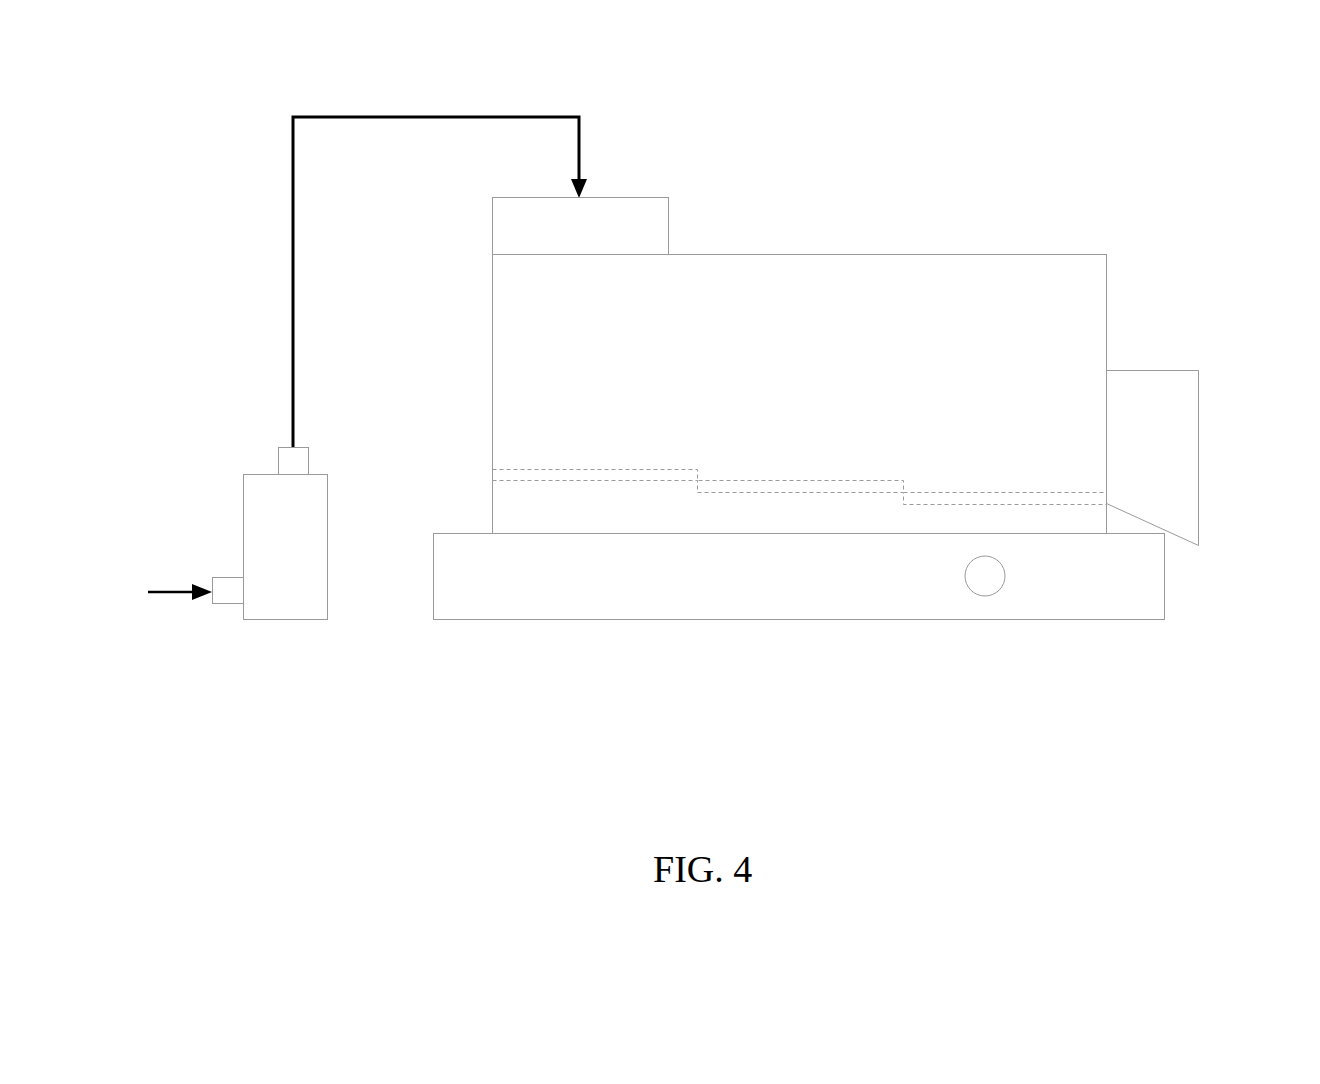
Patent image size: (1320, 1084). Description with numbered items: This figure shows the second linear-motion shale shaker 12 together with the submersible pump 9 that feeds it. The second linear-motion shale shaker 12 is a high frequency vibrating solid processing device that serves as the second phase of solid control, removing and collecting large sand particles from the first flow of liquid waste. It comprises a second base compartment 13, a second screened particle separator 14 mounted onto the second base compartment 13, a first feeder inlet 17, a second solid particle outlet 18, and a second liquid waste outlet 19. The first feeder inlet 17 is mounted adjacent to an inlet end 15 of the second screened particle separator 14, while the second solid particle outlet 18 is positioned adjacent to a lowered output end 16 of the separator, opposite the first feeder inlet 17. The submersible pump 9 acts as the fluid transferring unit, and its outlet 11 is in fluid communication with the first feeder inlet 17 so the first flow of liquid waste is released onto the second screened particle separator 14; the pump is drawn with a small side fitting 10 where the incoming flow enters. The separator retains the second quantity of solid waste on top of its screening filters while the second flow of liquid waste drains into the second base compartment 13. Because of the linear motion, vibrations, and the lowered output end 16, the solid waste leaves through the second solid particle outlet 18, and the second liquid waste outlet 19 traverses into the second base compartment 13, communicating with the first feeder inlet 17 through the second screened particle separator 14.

The submersible pump 9 is at (302, 616).
The gas inlet 10 is at (230, 603).
The outlet 11 is at (280, 460).
The second linear-motion shale shaker 12 is at (443, 364).
The second base compartment 13 is at (650, 610).
The second screened particle separator 14 is at (835, 480).
The inlet end 15 is at (501, 458).
The lowered output end 16 is at (1099, 480).
The first feeder inlet 17 is at (664, 212).
The second solid particle outlet 18 is at (1194, 448).
The second liquid waste outlet 19 is at (1005, 574).